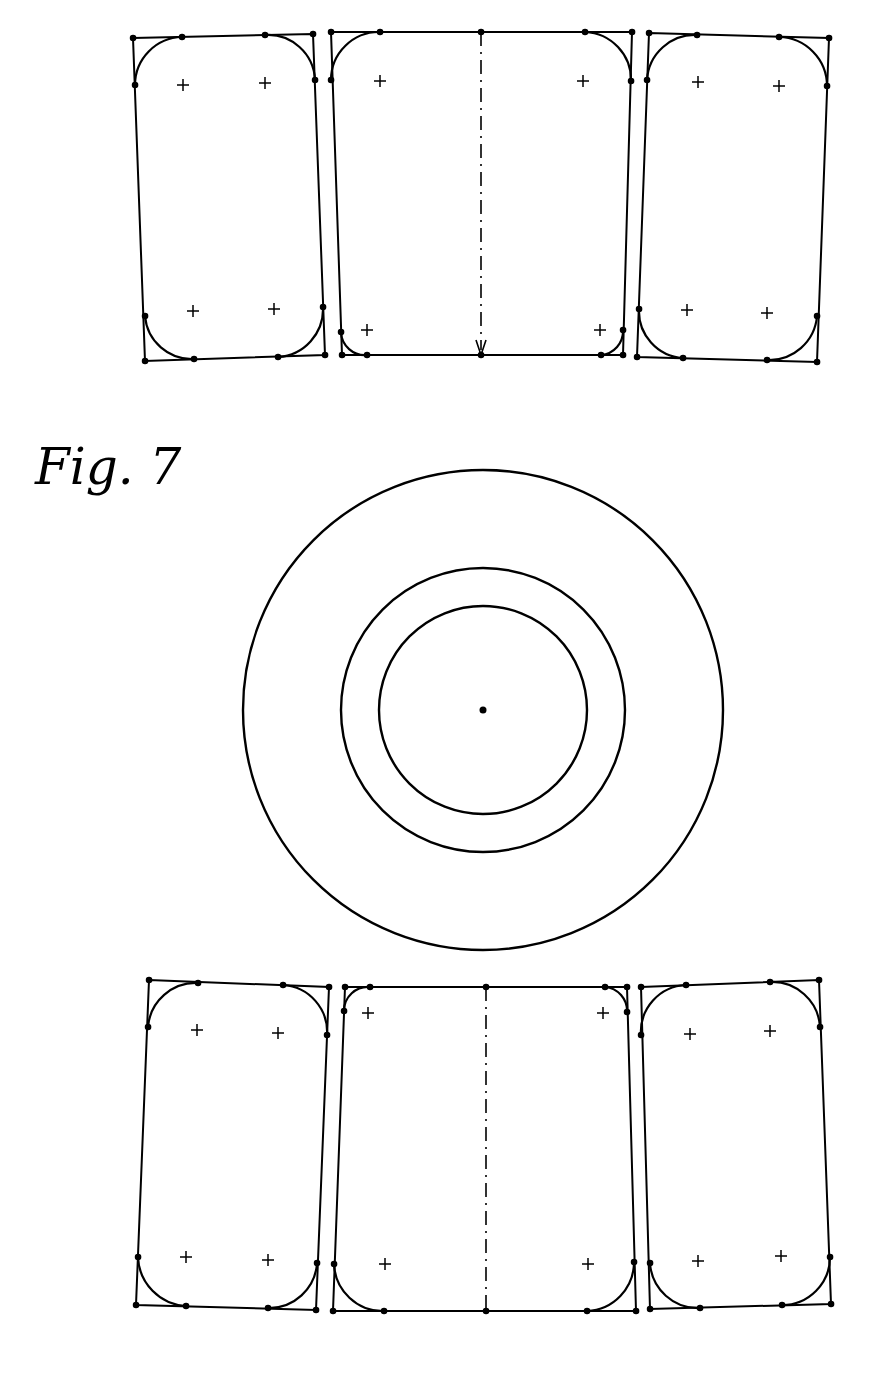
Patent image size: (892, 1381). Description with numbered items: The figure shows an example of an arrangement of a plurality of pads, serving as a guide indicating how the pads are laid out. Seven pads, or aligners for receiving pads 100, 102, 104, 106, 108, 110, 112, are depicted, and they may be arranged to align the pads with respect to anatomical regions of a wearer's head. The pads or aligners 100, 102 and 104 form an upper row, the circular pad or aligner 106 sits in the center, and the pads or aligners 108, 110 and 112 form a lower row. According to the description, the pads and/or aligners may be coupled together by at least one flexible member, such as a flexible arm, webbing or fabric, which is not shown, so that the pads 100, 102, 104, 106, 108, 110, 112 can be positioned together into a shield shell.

The pad or aligner for receiving a pad 100 is at (229, 197).
The pad or aligner for receiving a pad 102 is at (481, 193).
The pad or aligner for receiving a pad 104 is at (733, 197).
The pad or aligner for receiving a pad 106 is at (483, 710).
The pad or aligner for receiving a pad 108 is at (232, 1145).
The pad or aligner for receiving a pad 110 is at (484, 1149).
The pad or aligner for receiving a pad 112 is at (736, 1144).